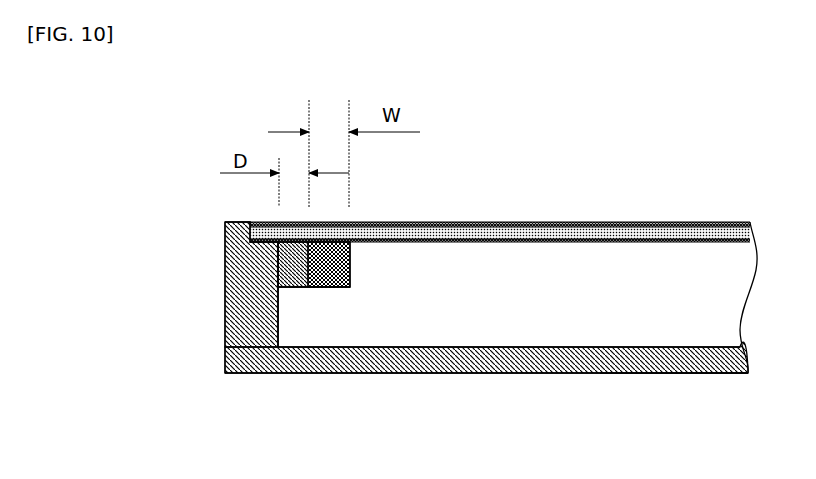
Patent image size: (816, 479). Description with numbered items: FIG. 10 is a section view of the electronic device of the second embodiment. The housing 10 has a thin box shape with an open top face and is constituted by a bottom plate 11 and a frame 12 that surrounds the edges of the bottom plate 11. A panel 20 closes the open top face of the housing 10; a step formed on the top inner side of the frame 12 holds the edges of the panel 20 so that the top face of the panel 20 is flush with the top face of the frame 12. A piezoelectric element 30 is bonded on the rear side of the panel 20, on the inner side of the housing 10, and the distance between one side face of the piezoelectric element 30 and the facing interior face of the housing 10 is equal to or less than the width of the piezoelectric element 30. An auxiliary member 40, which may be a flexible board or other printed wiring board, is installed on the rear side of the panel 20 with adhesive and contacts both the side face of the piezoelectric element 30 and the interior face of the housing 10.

The housing 10 is at (527, 373).
The bottom plate 11 is at (675, 373).
The frame 12 is at (224, 288).
The panel 20 is at (532, 222).
The piezoelectric element 30 is at (351, 266).
The auxiliary member 40 is at (290, 290).